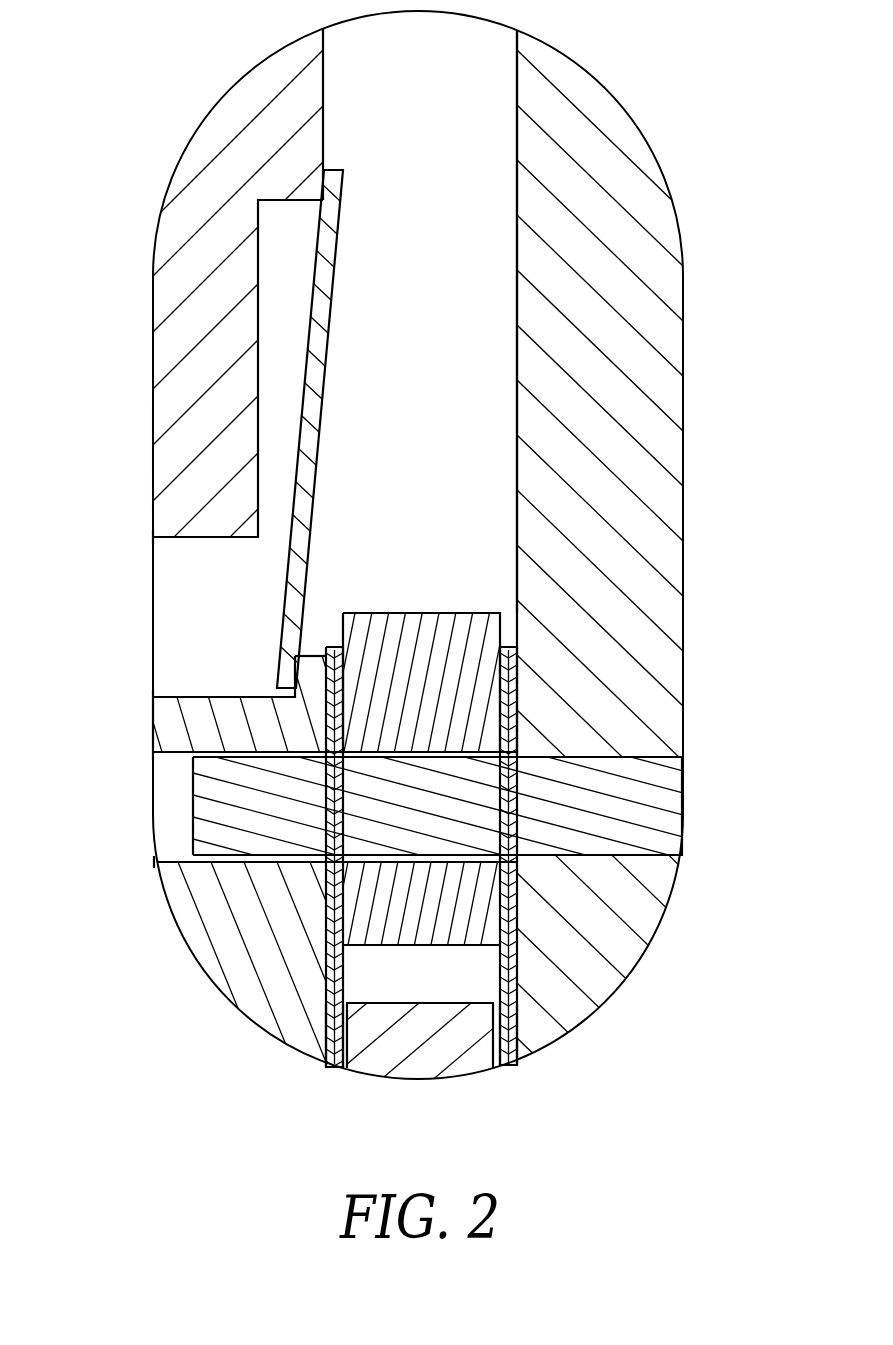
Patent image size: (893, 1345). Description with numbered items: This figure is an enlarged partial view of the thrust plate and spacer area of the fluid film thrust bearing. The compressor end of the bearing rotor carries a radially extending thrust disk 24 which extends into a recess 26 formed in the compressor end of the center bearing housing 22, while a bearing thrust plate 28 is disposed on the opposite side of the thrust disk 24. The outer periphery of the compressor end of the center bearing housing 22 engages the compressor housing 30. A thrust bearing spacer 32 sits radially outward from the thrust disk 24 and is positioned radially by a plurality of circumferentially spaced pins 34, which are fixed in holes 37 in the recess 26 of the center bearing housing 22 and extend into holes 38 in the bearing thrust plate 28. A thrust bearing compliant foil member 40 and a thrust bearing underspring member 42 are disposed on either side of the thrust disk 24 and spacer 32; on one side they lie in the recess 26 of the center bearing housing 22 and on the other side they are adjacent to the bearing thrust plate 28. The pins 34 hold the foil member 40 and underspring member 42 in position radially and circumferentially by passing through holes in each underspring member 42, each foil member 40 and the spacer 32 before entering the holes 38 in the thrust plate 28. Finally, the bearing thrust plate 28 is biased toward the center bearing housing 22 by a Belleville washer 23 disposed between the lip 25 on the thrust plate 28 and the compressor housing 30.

The center bearing housing 22 is at (672, 402).
The Belleville washer 23 is at (340, 250).
The thrust disk 24 is at (400, 1003).
The lip 25 is at (307, 660).
The recess 26 is at (515, 302).
The bearing thrust plate 28 is at (172, 724).
The compressor housing 30 is at (172, 297).
The thrust bearing spacer 32 is at (400, 612).
The pins 34 is at (202, 800).
The holes 37 is at (683, 772).
The holes 38 is at (168, 858).
The compliant foil member 40 is at (343, 1053).
The underspring member 42 is at (325, 1037).